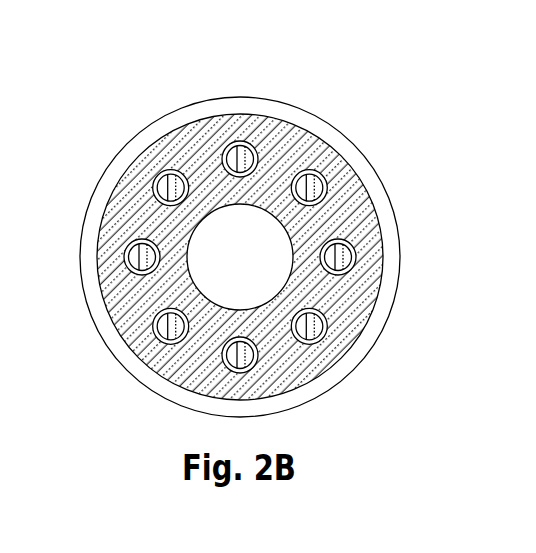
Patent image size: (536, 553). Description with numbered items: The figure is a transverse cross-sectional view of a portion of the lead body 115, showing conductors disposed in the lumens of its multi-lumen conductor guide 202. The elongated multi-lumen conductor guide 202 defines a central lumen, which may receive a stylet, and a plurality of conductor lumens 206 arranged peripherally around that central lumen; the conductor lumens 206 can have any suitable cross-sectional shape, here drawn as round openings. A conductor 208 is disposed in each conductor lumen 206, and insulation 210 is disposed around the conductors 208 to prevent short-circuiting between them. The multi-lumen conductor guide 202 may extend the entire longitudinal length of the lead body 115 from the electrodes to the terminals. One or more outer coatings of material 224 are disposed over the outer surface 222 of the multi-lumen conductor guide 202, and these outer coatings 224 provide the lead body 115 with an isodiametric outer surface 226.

The lead body 115 is at (357, 85).
The multi-lumen conductor guide 202 is at (128, 185).
The conductor lumen 206 is at (325, 200).
The conductor 208 is at (326, 178).
The insulation 210 is at (316, 186).
The outer surface 222 is at (147, 369).
The outer coating of material 224 is at (255, 107).
The isodiametric outer surface 226 is at (360, 357).